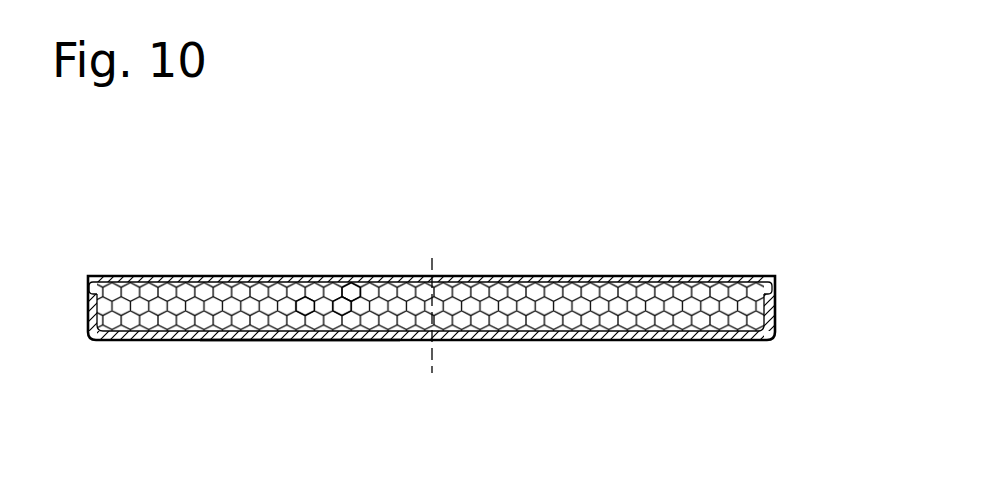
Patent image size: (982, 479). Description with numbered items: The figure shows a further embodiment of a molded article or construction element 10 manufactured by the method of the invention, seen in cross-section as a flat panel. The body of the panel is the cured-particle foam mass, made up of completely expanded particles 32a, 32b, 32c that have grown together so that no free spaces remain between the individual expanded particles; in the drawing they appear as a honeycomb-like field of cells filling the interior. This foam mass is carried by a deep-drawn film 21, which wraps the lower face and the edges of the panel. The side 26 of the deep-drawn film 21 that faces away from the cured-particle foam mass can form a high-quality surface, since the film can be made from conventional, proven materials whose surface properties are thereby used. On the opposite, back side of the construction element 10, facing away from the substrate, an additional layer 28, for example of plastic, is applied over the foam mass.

The construction element 10 is at (564, 193).
The deep-drawn film 21 is at (293, 343).
The side of the deep-drawn film 26 is at (527, 341).
The additional layer 28 is at (333, 280).
The completely expanded particle 32a is at (312, 313).
The completely expanded particle 32b is at (345, 295).
The completely expanded particle 32c is at (350, 312).